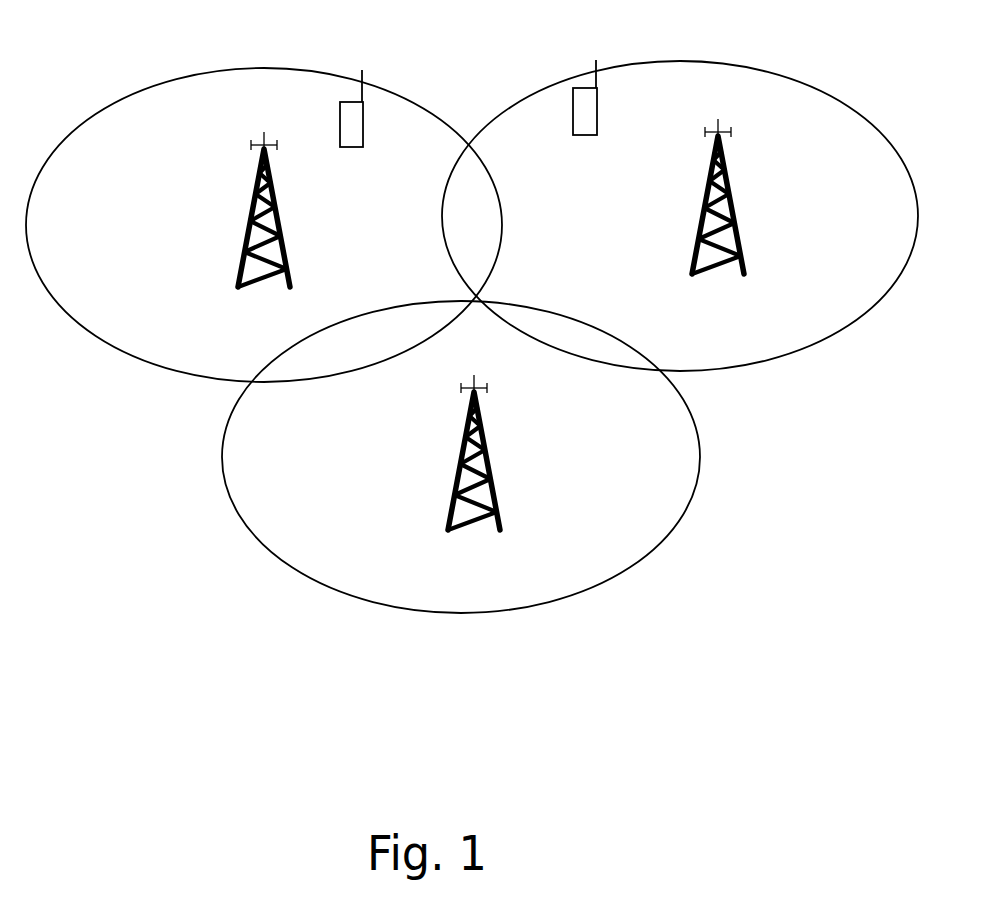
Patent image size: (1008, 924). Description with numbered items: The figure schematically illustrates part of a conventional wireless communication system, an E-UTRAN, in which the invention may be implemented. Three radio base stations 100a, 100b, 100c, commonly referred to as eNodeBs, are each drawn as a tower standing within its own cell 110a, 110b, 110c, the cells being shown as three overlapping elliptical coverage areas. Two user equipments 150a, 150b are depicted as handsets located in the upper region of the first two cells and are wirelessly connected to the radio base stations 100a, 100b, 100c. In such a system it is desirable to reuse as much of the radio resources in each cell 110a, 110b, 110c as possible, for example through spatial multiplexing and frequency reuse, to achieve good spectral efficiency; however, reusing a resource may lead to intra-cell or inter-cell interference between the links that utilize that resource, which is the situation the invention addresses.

The cell 110a is at (155, 169).
The cell 110b is at (908, 204).
The cell 110c is at (354, 557).
The radio base station 100a is at (242, 289).
The radio base station 100b is at (739, 268).
The radio base station 100c is at (480, 515).
The user equipment 150a is at (350, 98).
The user equipment 150b is at (585, 95).